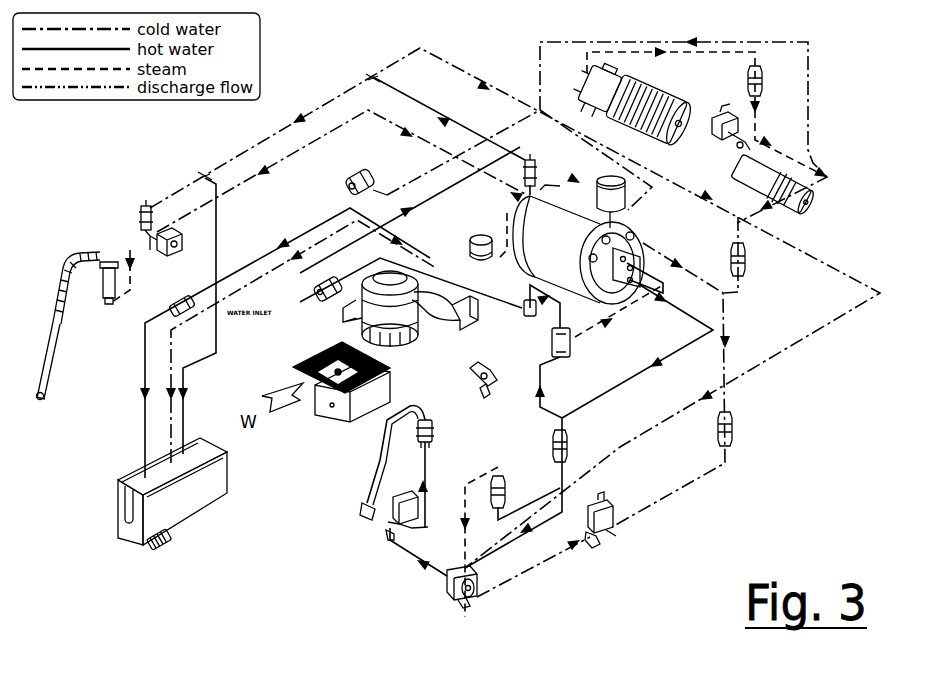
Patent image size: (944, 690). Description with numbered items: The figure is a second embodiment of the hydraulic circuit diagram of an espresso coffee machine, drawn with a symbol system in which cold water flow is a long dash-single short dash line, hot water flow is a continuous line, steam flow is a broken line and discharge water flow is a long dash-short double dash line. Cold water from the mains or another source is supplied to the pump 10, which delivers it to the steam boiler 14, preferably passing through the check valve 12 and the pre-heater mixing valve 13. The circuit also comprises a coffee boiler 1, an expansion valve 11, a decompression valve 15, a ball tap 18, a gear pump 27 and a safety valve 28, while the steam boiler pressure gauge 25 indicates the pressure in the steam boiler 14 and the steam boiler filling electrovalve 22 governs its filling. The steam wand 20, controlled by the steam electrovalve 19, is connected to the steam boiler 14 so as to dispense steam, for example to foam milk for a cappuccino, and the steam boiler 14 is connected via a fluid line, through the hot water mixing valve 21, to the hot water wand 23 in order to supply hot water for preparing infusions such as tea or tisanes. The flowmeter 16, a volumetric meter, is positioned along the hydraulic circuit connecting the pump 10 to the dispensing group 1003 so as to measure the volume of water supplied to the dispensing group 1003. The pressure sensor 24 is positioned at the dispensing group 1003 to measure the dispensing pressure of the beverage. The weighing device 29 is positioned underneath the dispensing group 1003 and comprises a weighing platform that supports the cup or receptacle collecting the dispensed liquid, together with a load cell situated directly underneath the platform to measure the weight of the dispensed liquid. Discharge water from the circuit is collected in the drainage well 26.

The coffee boiler 1 is at (398, 344).
The pump 10 is at (660, 88).
The expansion valve 11 is at (182, 300).
The check valve 12 is at (763, 82).
The pre-heater mixing valve 13 is at (552, 352).
The steam boiler 14 is at (641, 252).
The decompression valve 15 is at (144, 206).
The flowmeter (volumetric meter) 16 is at (724, 136).
The ball tap 18 is at (481, 384).
The steam electrovalve 19 is at (165, 256).
The steam wand 20 is at (40, 403).
The hot water mixing valve 21 is at (447, 588).
The steam boiler filling electrovalve 22 is at (608, 545).
The hot water wand 23 is at (383, 455).
The pressure sensor 24 is at (318, 295).
The steam boiler pressure gauge 25 is at (476, 236).
The drainage well 26 is at (175, 518).
The gear pump 27 is at (812, 200).
The safety valve 28 is at (626, 197).
The weighing device 29 is at (320, 412).
The dispensing group 1003 is at (315, 367).